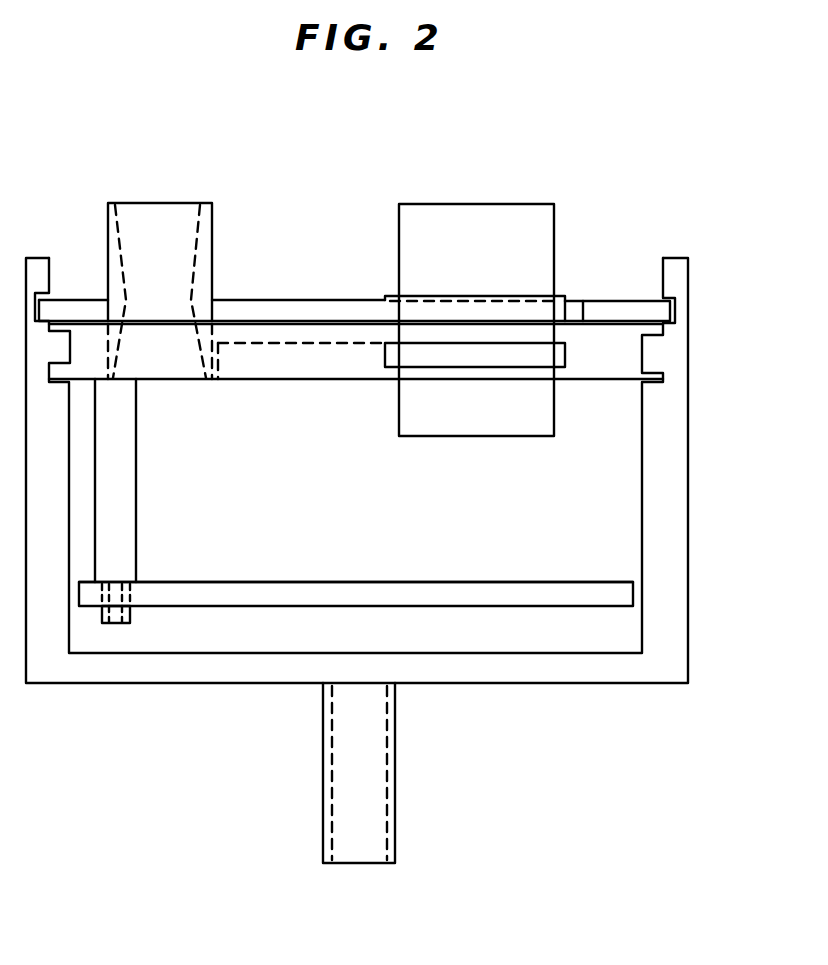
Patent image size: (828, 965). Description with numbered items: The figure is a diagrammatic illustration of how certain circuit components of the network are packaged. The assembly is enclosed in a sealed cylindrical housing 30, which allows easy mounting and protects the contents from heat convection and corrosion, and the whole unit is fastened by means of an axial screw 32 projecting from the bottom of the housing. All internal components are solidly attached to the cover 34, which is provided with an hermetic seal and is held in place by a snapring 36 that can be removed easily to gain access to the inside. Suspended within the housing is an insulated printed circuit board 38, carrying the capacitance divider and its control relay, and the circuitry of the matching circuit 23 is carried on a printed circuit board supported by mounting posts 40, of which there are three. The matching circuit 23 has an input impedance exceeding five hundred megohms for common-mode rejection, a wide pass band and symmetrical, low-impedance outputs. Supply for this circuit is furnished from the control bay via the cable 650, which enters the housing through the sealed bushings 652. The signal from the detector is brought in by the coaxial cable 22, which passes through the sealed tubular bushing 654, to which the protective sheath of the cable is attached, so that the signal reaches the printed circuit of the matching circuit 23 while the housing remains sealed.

The coaxial cable 22 is at (146, 192).
The sealed tubular bushing 654 is at (213, 250).
The cable 650 is at (556, 214).
The sealed bushings 652 is at (557, 247).
The snapring 36 is at (622, 308).
The cover 34 is at (605, 372).
The mounting posts 40 is at (125, 516).
The matching circuit 23 is at (278, 582).
The printed circuit board 38 is at (496, 583).
The sealed cylindrical housing 30 is at (688, 515).
The axial screw 32 is at (396, 787).